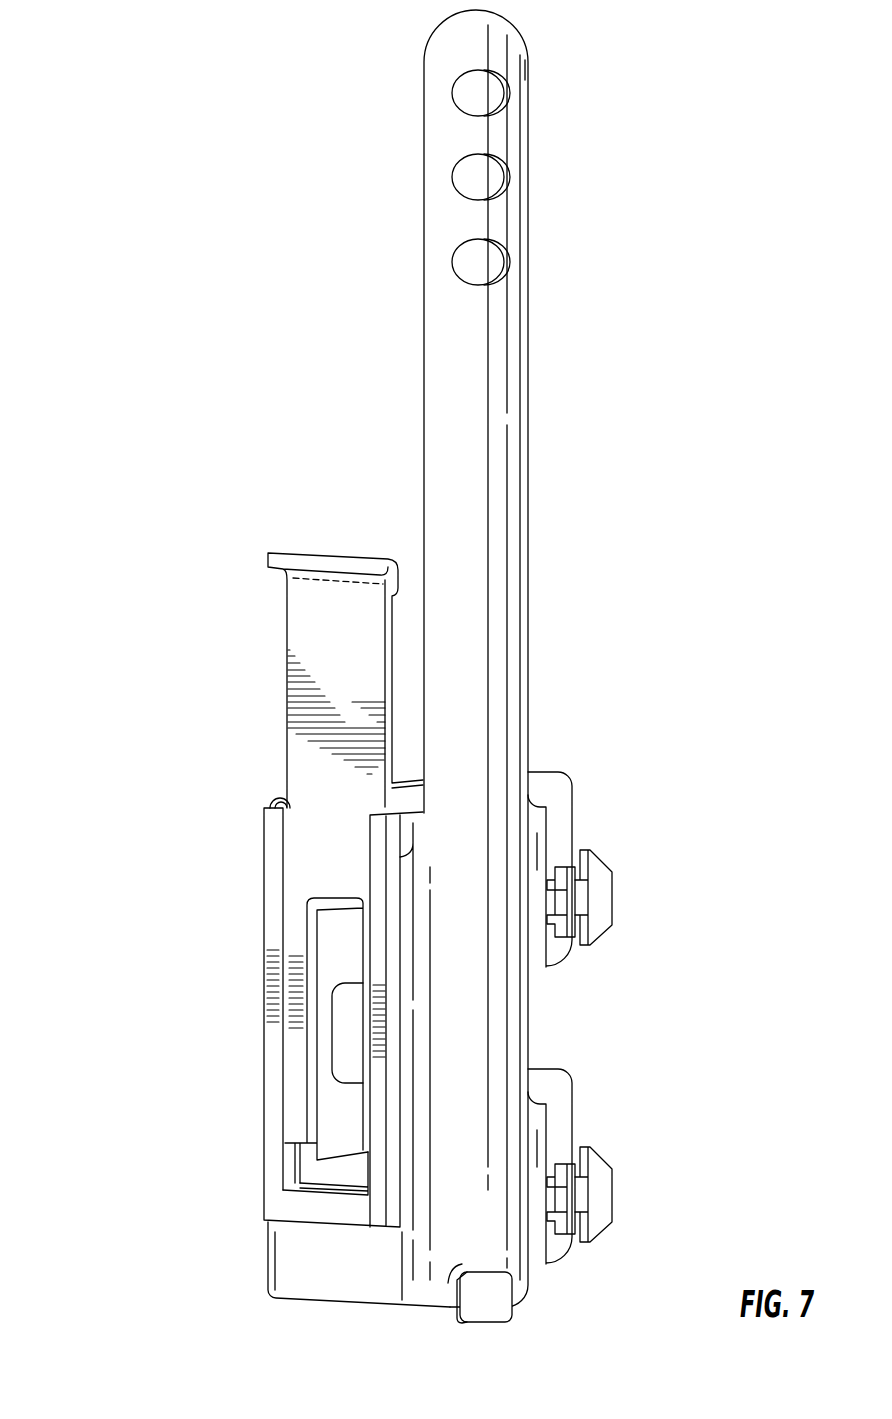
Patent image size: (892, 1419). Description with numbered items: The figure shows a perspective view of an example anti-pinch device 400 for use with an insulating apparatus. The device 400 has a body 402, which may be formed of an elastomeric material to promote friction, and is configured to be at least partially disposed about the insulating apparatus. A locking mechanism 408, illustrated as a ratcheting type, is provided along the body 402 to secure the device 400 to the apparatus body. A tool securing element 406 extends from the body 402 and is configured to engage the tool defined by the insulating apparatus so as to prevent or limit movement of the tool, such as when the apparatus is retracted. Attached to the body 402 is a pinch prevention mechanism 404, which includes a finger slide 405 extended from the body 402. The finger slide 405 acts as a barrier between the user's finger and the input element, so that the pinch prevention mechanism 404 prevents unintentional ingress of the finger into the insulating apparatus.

The anti-pinch device 400 is at (182, 125).
The body 402 is at (530, 1001).
The pinch prevention mechanism 404 is at (136, 802).
The finger slide 405 is at (291, 633).
The tool securing element 406 is at (498, 383).
The locking mechanism 408 is at (647, 760).